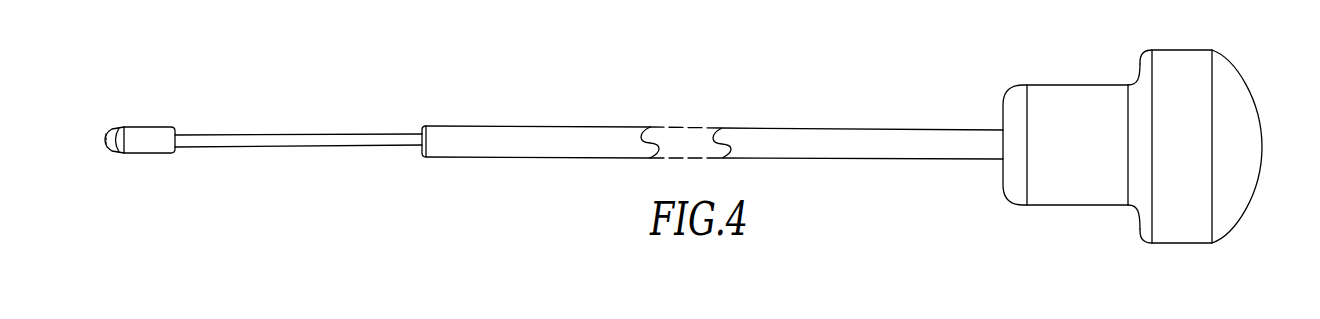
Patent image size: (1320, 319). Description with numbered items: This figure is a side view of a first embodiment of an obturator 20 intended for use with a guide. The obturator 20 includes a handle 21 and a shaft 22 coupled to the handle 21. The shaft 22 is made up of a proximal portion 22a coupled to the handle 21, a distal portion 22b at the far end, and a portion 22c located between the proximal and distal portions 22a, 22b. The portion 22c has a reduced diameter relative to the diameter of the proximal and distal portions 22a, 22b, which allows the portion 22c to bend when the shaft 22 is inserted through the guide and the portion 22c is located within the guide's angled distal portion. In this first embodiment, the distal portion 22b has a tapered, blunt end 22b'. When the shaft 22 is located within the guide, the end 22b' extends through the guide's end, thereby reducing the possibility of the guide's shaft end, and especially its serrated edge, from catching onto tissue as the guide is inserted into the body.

The obturator 20 is at (677, 98).
The handle 21 is at (1060, 100).
The shaft 22 is at (498, 146).
The proximal portion 22a is at (868, 148).
The distal portion 22b is at (133, 139).
The tapered, blunt end 22b' is at (108, 170).
The reduced diameter portion 22c is at (260, 139).